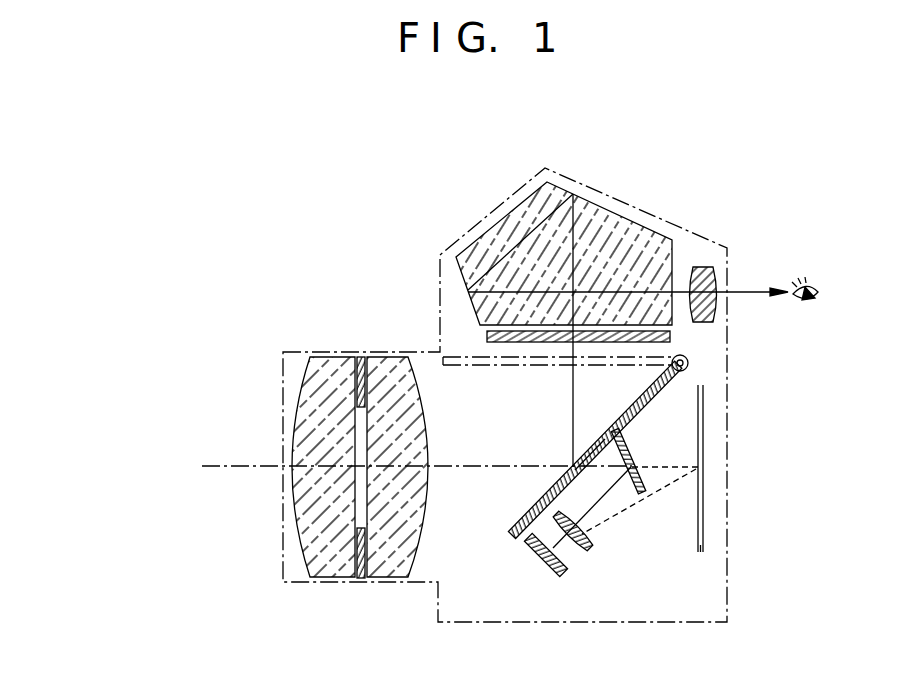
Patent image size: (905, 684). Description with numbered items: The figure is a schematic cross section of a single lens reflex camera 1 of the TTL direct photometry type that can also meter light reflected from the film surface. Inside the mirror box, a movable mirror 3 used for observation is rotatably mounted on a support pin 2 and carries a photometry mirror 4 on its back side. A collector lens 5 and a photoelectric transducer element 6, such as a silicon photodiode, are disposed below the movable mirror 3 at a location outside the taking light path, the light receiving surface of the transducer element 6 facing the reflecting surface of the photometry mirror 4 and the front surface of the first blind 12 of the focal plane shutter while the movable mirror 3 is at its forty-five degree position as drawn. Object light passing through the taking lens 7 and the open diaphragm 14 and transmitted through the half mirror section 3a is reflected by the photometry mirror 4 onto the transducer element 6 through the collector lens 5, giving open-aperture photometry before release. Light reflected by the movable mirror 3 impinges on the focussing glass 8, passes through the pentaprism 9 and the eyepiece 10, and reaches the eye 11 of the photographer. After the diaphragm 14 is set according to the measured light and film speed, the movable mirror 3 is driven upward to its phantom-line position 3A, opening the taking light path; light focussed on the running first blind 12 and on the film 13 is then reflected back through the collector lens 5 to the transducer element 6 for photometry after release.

The camera 1 is at (637, 203).
The support pin 2 is at (684, 356).
The movable mirror 3 is at (647, 390).
The raised position of movable mirror 3A is at (488, 360).
The half mirror section 3a is at (597, 445).
The photometry mirror 4 is at (632, 458).
The collector lens 5 is at (585, 540).
The photoelectric transducer element 6 is at (562, 570).
The taking lens 7 is at (413, 407).
The focussing glass 8 is at (493, 342).
The pentaprism 9 is at (500, 230).
The eyepiece 10 is at (712, 283).
The eye 11 is at (812, 283).
The first blind 12 is at (697, 518).
The film 13 is at (703, 552).
The diaphragm 14 is at (362, 356).